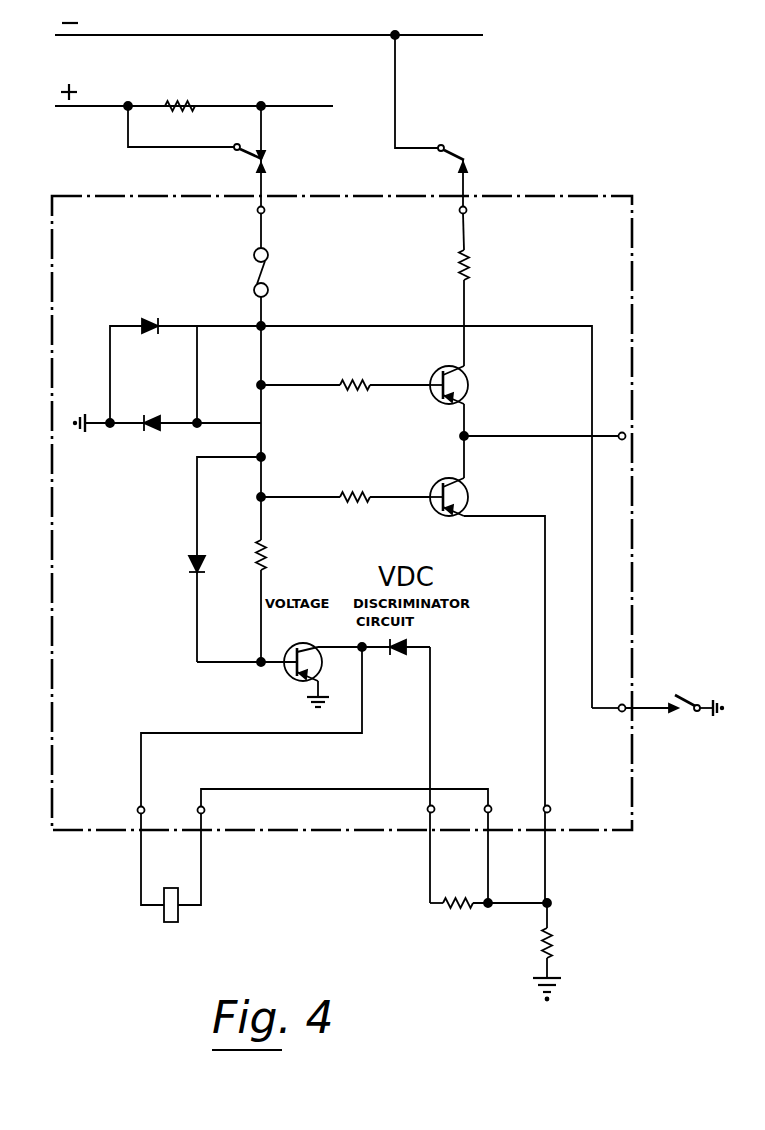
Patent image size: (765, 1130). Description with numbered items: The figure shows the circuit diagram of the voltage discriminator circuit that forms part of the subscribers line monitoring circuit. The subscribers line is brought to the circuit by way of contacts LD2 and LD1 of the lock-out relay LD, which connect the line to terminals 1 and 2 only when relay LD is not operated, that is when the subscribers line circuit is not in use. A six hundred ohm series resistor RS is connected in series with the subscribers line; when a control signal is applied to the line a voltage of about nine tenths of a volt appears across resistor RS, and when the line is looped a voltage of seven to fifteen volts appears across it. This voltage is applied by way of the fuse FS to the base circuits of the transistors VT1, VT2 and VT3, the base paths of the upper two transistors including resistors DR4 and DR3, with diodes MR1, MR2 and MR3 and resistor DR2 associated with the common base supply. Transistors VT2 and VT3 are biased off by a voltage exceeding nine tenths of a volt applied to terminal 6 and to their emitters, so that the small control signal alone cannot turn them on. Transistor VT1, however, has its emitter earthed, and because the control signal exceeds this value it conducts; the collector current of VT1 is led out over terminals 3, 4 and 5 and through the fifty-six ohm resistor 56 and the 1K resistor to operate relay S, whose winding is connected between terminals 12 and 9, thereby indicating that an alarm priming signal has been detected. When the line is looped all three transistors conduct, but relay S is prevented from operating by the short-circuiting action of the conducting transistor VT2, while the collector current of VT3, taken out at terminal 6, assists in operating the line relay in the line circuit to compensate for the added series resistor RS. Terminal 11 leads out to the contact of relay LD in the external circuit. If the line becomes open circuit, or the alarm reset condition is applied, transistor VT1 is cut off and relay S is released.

The terminal 1 is at (268, 215).
The terminal 2 is at (470, 215).
The terminal 3 is at (424, 812).
The terminal 4 is at (496, 812).
The terminal 5 is at (554, 812).
The terminal 6 is at (543, 426).
The terminal 9 is at (208, 812).
The terminal 11 is at (609, 721).
The terminal 12 is at (126, 812).
The 600 ohm resistor RS is at (178, 107).
The contact LD1 is at (449, 122).
The contact LD2 is at (215, 158).
The relay LD is at (674, 695).
The fuse FS is at (273, 269).
The diode MR1 is at (185, 360).
The diode MR2 is at (167, 413).
The diode MR3 is at (201, 559).
The resistor DR2 is at (280, 601).
The resistor DR3 is at (345, 487).
The resistor DR4 is at (345, 375).
The transistor VT1 is at (263, 664).
The transistor VT2 is at (487, 690).
The transistor VT3 is at (469, 422).
The relay S is at (326, 855).
The 56 ohm resistor 56 is at (490, 915).
The 1K resistor 1K is at (553, 952).